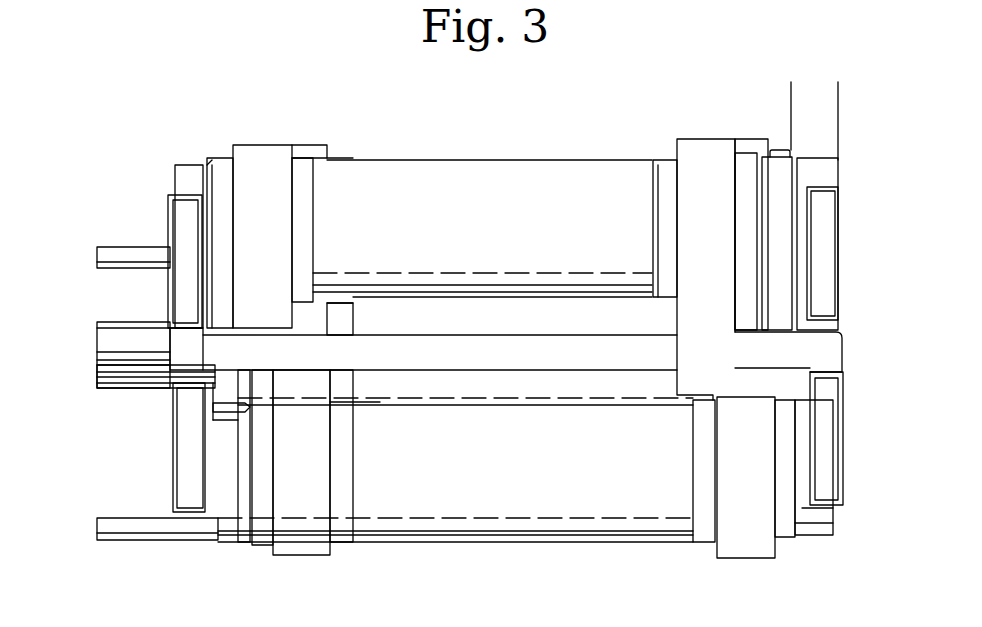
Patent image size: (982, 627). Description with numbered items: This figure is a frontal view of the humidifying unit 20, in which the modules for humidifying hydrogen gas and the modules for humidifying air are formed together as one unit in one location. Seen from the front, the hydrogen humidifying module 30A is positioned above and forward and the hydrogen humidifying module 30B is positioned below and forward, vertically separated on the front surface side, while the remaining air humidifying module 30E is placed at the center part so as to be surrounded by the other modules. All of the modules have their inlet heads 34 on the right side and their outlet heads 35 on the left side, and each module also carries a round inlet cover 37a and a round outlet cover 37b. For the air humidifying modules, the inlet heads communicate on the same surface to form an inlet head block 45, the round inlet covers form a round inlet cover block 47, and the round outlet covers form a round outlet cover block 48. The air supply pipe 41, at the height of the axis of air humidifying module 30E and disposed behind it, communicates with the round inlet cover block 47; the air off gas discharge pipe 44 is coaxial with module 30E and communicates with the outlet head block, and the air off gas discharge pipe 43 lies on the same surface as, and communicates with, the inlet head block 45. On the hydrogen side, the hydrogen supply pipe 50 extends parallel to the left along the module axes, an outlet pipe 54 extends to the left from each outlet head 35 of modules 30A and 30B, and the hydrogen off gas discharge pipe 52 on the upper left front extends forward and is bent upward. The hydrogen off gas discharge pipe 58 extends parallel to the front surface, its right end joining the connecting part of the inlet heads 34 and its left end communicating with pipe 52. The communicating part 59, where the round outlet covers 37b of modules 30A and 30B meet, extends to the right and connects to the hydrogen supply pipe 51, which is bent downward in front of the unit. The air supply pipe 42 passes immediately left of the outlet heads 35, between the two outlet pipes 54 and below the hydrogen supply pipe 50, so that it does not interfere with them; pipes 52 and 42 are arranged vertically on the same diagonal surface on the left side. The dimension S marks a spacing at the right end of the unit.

The humidifying unit 20 is at (522, 140).
The hydrogen humidifying module 30A is at (455, 160).
The hydrogen humidifying module 30B is at (522, 543).
The air humidifying module 30E is at (495, 388).
The inlet head 34 is at (782, 150).
The outlet head 35 is at (186, 165).
The round inlet cover 37a is at (260, 145).
The round outlet cover 37b is at (680, 140).
The air supply pipe 41 is at (97, 392).
The air supply pipe 42 is at (172, 460).
The air off gas discharge pipe 43 is at (842, 230).
The air off gas discharge pipe 44 is at (100, 370).
The inlet head block 45 is at (825, 158).
The round inlet cover block 47 is at (313, 145).
The round outlet cover block 48 is at (748, 140).
The hydrogen supply pipe 50 is at (97, 337).
The hydrogen supply pipe 51 is at (843, 420).
The hydrogen off gas discharge pipe 52 is at (170, 222).
The outlet pipe 54 is at (97, 253).
The hydrogen off gas discharge pipe 58 is at (593, 365).
The communicating part 59 is at (677, 376).
The gap spacing S is at (742, 91).